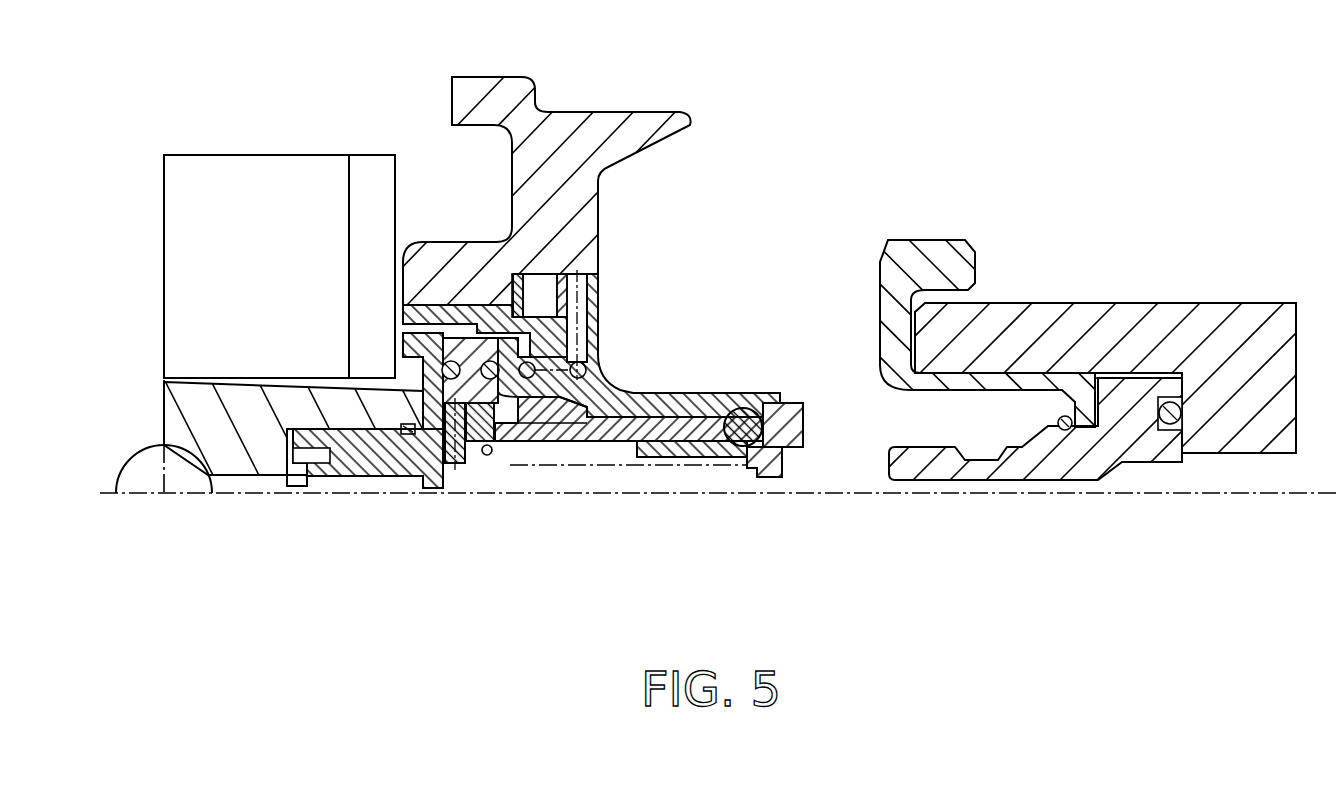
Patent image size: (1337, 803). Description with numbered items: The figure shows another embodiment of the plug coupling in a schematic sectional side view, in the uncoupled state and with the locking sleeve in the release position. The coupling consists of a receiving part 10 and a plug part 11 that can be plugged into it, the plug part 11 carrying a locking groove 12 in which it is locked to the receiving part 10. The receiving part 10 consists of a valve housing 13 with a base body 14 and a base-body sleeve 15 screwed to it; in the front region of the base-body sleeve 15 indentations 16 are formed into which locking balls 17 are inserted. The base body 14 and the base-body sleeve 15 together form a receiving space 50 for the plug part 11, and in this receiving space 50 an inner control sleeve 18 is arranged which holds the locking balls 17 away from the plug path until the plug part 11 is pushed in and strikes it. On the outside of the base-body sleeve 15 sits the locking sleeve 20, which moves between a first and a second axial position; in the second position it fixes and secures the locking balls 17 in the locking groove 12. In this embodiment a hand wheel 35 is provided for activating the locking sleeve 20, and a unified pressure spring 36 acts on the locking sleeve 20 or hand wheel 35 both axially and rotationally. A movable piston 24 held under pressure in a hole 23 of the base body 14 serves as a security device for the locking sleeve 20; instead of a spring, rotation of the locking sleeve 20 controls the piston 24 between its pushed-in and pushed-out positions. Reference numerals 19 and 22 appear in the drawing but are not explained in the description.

The receiving part 10 is at (352, 107).
The plug part 11 is at (1165, 285).
The locking groove 12 is at (975, 455).
The valve housing 13 is at (405, 340).
The base body 14 is at (508, 430).
The base-body sleeve 15 is at (600, 438).
The indentations 16 is at (787, 457).
The locking balls 17 is at (745, 417).
The inner control sleeve 18 is at (757, 467).
The gap 19 is at (563, 468).
The locking sleeve 20 is at (614, 385).
The housing 22 is at (517, 483).
The hole 23 is at (432, 428).
The movable piston 24 is at (430, 395).
The hand wheel 35 is at (612, 115).
The unified pressure spring 36 is at (582, 365).
The receiving space 50 is at (623, 455).